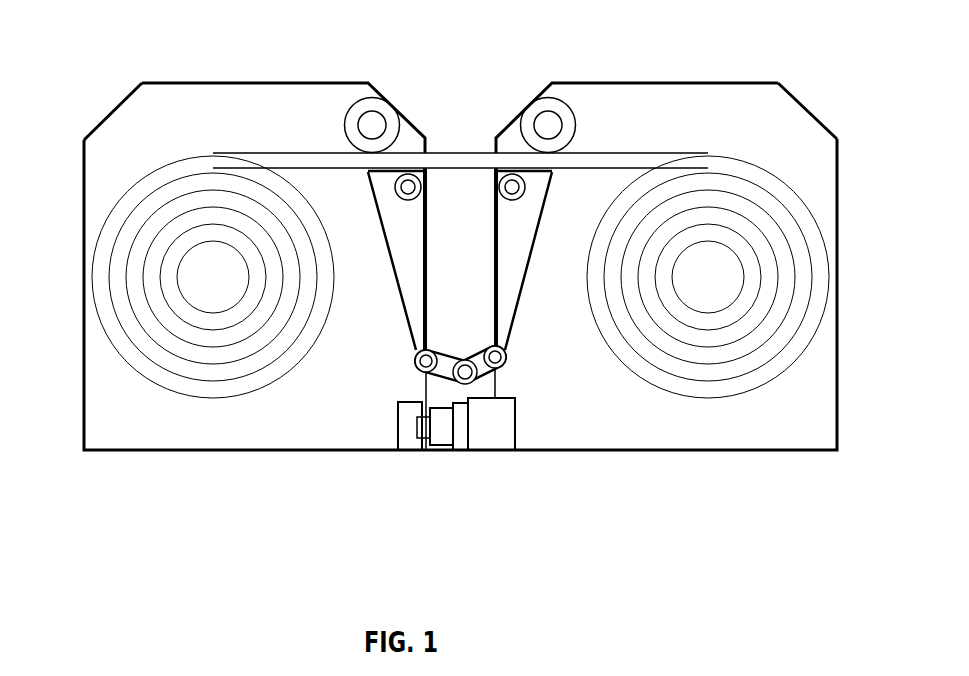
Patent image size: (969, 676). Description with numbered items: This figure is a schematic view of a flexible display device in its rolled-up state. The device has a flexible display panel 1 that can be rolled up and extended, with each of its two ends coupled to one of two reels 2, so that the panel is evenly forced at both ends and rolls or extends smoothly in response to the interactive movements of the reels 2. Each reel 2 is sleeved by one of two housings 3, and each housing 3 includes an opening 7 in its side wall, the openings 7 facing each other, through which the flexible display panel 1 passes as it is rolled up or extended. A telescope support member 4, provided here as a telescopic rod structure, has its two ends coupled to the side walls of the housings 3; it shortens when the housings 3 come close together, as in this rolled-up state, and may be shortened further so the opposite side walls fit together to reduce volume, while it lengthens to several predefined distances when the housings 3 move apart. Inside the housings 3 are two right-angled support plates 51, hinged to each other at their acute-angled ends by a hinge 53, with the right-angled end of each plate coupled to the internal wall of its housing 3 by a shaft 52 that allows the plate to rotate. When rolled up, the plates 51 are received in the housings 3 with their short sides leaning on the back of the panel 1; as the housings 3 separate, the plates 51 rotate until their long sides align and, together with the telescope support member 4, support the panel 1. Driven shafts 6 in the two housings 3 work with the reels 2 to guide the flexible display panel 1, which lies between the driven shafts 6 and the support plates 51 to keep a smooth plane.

The flexible display panel 1 is at (178, 170).
The reel 2 is at (208, 267).
The housing 3 is at (116, 104).
The telescope support member 4 is at (482, 435).
The driven shaft 6 is at (392, 113).
The opening 7 is at (493, 151).
The right-angled support plate 51 is at (413, 253).
The shaft 52 is at (409, 180).
The hinge 53 is at (427, 374).